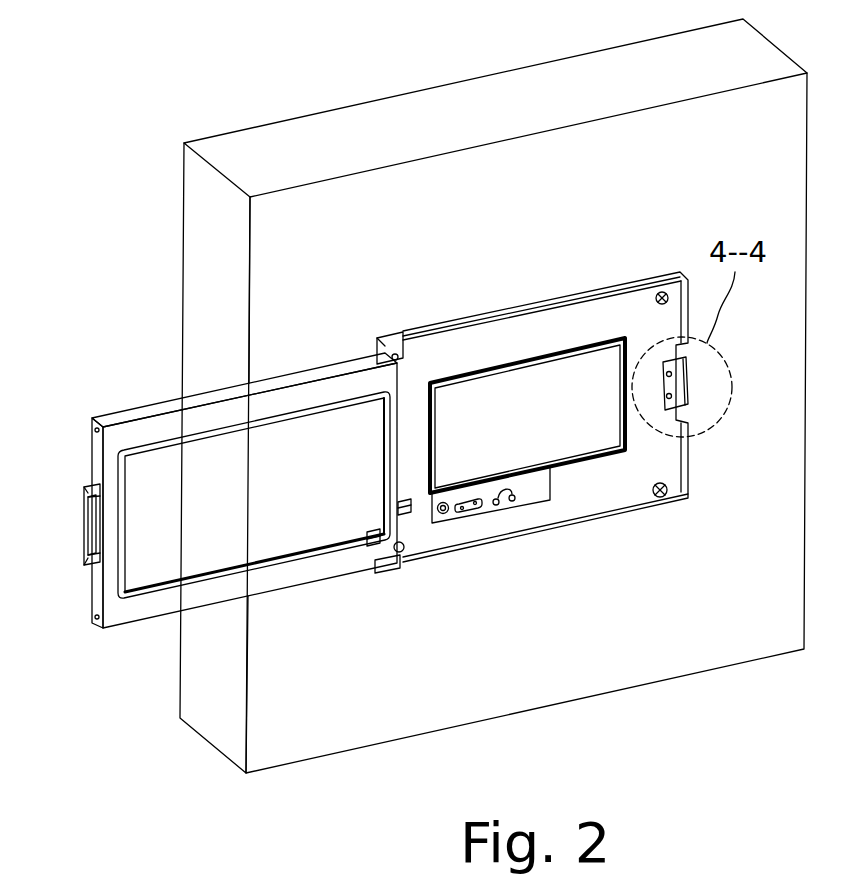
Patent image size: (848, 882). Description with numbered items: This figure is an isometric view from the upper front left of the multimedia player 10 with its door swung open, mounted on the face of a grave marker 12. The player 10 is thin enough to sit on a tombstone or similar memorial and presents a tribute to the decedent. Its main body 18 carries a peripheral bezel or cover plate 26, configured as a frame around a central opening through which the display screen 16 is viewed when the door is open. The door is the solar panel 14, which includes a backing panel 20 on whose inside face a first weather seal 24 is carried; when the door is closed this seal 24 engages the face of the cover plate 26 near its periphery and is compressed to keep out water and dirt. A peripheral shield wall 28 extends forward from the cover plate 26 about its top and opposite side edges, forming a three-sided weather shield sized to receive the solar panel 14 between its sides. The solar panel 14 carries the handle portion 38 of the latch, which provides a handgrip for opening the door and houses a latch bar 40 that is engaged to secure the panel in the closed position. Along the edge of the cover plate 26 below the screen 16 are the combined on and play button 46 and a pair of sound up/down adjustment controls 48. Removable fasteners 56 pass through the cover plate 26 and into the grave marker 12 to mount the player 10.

The multimedia player 10 is at (251, 292).
The grave marker 12 is at (321, 128).
The solar panel 14 is at (171, 398).
The display screen 16 is at (506, 433).
The main body 18 is at (573, 520).
The backing panel 20 is at (232, 499).
The first weather seal 24 is at (158, 605).
The cover plate 26 is at (460, 357).
The peripheral shield wall 28 is at (530, 308).
The handle portion 38 is at (87, 490).
The latch bar 40 is at (84, 530).
The combined on and play button 46 is at (443, 514).
The sound up/down adjustment controls 48 is at (470, 509).
The removable fasteners 56 is at (656, 292).